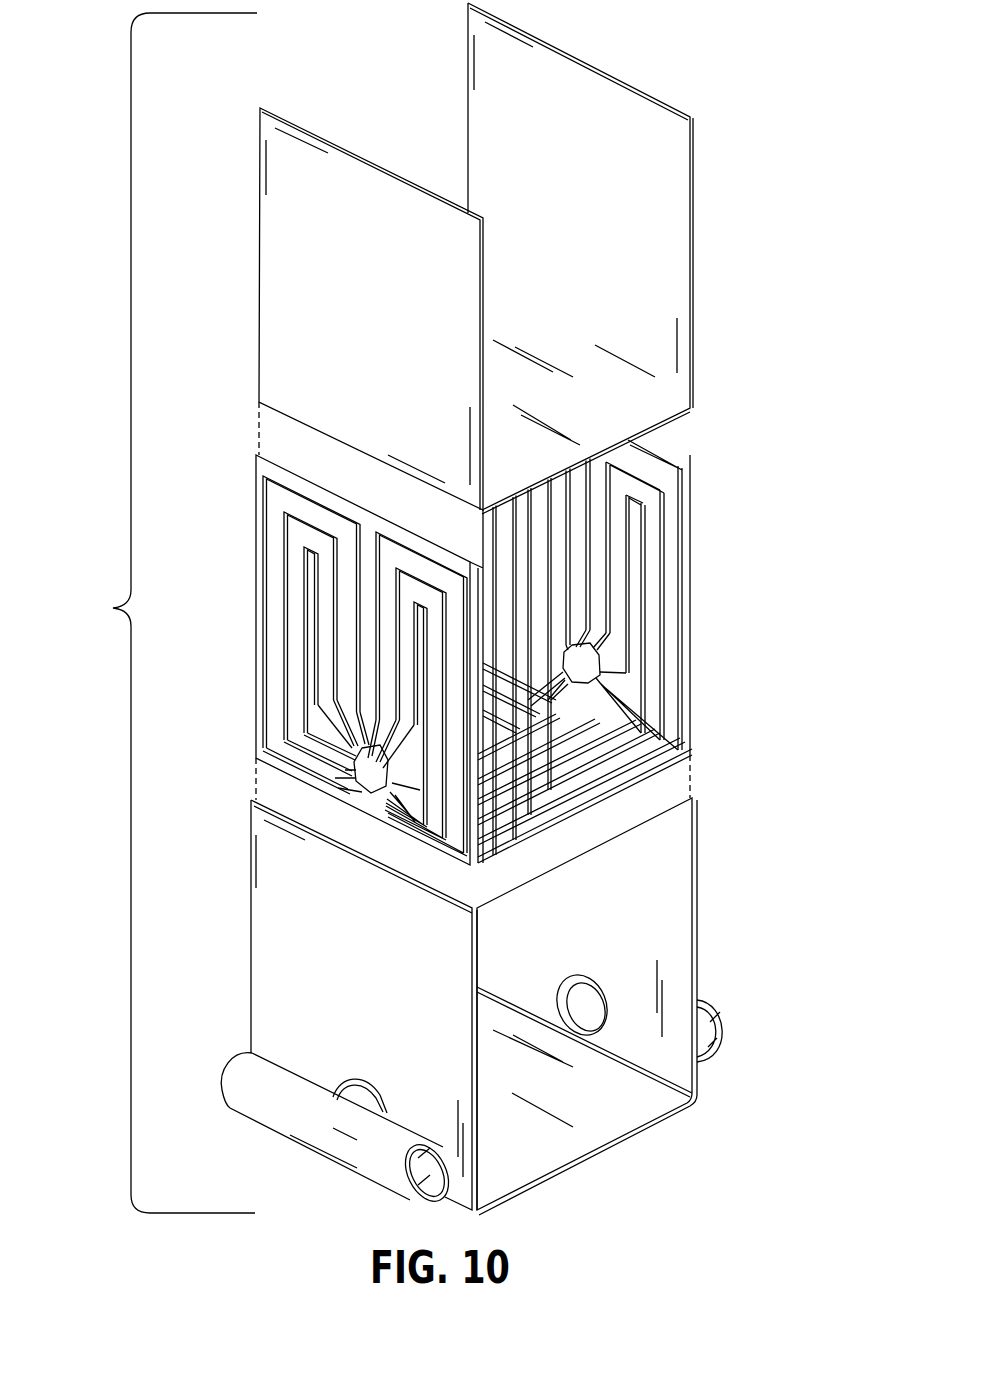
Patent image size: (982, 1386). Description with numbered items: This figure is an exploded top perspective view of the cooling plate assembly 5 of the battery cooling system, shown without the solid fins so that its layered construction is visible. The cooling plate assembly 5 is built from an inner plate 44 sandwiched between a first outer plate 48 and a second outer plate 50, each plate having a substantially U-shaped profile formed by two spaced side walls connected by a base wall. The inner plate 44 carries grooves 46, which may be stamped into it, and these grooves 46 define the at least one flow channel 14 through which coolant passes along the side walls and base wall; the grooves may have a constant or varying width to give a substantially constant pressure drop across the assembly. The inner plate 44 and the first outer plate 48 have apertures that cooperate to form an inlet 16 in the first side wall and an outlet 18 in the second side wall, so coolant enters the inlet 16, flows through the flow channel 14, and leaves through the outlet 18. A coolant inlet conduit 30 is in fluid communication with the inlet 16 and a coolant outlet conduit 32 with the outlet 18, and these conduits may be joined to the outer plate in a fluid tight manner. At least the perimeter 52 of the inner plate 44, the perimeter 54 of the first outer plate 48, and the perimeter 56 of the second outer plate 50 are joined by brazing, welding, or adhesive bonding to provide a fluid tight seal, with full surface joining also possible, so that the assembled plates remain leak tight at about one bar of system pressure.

The cooling plate assembly 5 is at (113, 608).
The flow channel 14 is at (313, 666).
The grooves 46 is at (288, 563).
The inlet 16 is at (353, 800).
The outlet 18 is at (614, 663).
The coolant inlet conduit 30 is at (245, 1073).
The coolant outlet conduit 32 is at (705, 1012).
The inner plate 44 is at (489, 664).
The first outer plate 48 is at (282, 936).
The second outer plate 50 is at (282, 232).
The perimeter of the inner plate 52 is at (492, 812).
The perimeter of the first outer plate 54 is at (497, 943).
The perimeter of the second outer plate 56 is at (497, 242).